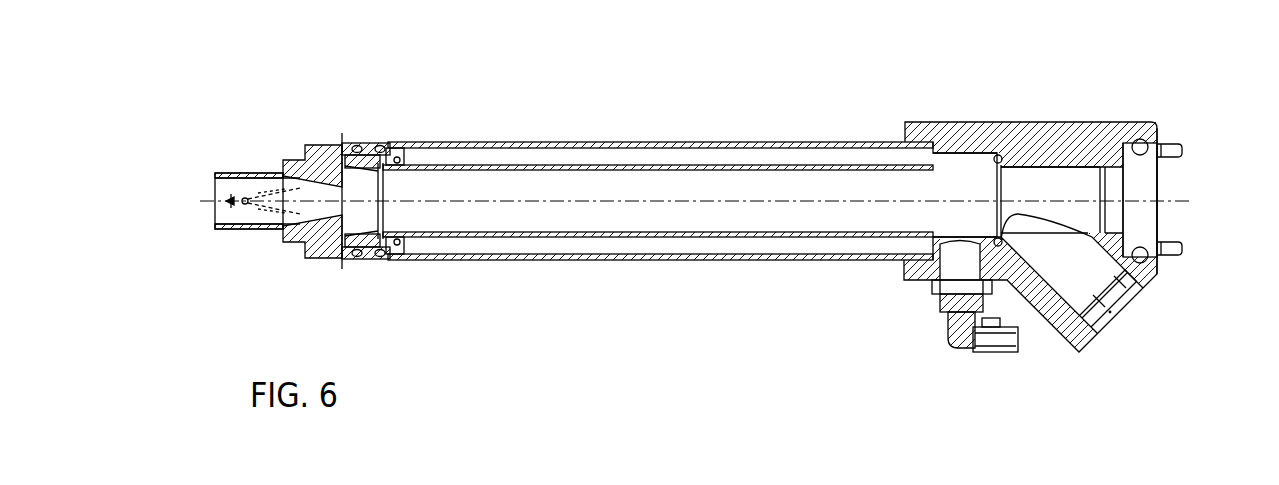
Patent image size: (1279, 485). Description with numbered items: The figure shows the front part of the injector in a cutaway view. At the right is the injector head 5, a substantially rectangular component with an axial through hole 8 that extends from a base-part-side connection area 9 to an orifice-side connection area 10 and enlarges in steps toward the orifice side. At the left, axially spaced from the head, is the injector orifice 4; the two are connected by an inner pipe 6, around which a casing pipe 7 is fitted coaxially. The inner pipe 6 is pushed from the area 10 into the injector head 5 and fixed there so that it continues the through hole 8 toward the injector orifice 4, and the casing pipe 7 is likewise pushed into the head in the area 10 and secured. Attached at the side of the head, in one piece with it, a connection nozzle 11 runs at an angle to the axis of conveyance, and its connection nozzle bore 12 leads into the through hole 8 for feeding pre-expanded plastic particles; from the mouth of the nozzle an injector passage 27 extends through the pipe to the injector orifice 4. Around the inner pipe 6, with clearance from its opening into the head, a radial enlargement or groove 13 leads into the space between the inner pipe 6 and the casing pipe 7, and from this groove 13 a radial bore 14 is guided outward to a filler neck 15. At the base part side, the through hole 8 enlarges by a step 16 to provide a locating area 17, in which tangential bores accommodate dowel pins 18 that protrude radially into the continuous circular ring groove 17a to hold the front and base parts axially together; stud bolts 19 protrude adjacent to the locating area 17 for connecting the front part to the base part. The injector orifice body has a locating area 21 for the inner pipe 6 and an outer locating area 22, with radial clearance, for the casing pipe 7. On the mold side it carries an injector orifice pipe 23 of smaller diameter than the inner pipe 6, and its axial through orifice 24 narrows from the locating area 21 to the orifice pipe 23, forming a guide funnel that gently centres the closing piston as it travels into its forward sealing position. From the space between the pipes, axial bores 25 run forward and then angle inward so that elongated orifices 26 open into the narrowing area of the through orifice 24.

The injector orifice 4 is at (206, 178).
The injector head 5 is at (998, 152).
The inner pipe 6 is at (665, 165).
The casing pipe 7 is at (602, 142).
The axial through hole 8 is at (1059, 196).
The base-part-side connection area 9 is at (1148, 196).
The orifice-side connection area 10 is at (977, 196).
The connection nozzle 11 is at (1146, 317).
The connection nozzle bore 12 is at (1086, 262).
The groove 13 is at (948, 152).
The radial bore 14 is at (972, 270).
The filler neck 15 is at (940, 302).
The step 16 is at (1133, 145).
The locating area 17 is at (1160, 145).
The continuous circular ring groove 17a is at (1137, 139).
The dowel pins 18 is at (1160, 245).
The stud bolts 19 is at (1184, 151).
The locating area 21 is at (386, 168).
The outer locating area 22 is at (375, 145).
The injector orifice pipe 23 is at (268, 231).
The axial through orifice 24 is at (295, 197).
The axial bores 25 is at (372, 259).
The elongated orifices 26 is at (292, 186).
The injector passage 27 is at (708, 185).